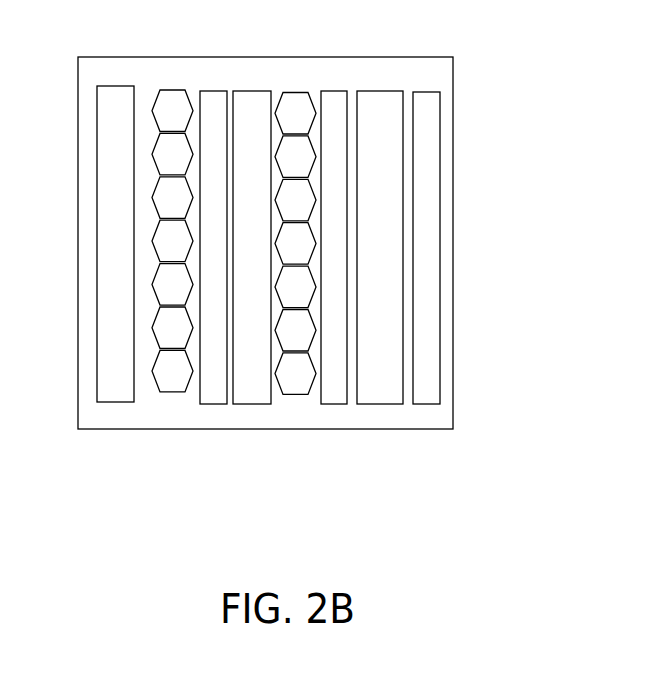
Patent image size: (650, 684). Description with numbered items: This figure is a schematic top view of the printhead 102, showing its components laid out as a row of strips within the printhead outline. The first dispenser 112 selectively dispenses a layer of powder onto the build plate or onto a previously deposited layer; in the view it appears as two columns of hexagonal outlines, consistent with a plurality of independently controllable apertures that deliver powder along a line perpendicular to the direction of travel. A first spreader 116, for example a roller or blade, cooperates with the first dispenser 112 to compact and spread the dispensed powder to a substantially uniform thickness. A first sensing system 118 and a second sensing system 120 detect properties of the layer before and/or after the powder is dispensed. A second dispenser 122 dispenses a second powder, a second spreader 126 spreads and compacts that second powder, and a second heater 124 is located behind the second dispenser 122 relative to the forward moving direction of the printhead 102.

The printhead 102 is at (455, 162).
The first dispenser 112 is at (162, 76).
The first spreader 116 is at (378, 388).
The first sensing system 118 is at (334, 388).
The second sensing system 120 is at (115, 390).
The second dispenser 122 is at (427, 383).
The second heater 124 is at (250, 378).
The second spreader 126 is at (206, 392).